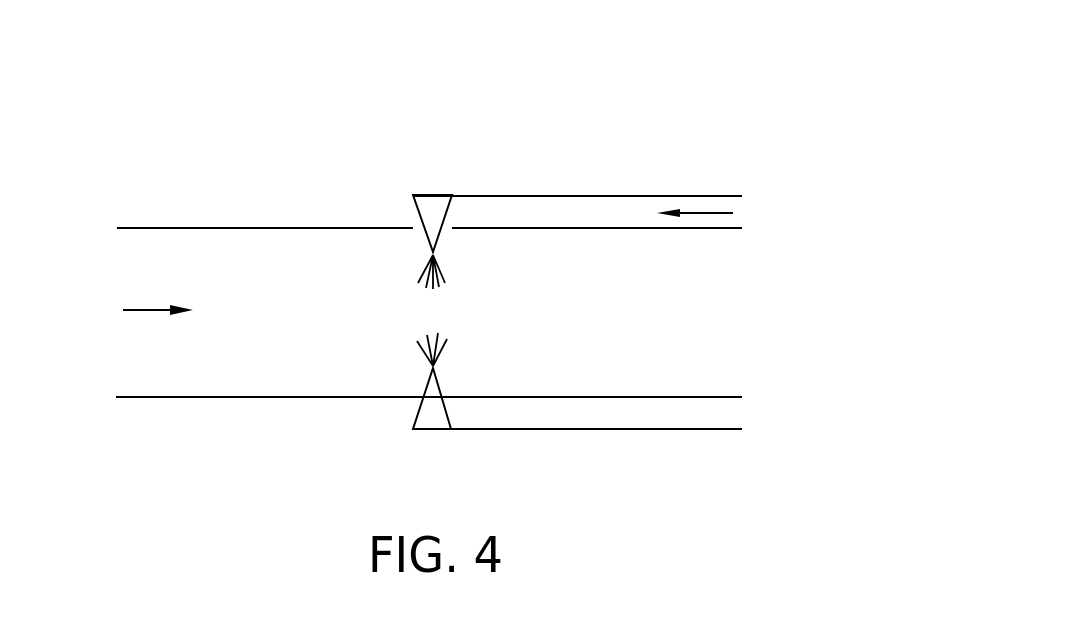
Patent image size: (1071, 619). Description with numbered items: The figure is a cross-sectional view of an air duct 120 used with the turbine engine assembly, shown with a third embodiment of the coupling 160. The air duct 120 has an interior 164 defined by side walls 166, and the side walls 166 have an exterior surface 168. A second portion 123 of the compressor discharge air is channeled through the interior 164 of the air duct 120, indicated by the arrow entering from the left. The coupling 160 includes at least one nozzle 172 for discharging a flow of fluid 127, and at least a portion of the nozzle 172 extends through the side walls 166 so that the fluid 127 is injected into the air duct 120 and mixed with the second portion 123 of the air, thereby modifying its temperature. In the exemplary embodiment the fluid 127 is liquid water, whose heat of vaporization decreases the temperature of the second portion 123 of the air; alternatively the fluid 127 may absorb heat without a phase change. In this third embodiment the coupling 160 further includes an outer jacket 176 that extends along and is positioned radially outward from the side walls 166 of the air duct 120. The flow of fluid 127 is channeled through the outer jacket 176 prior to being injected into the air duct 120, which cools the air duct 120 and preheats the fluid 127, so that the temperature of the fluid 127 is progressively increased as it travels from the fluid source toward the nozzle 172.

The air duct 120 is at (665, 96).
The second portion of CDC air 123 is at (142, 310).
The flow of fluid 127 is at (715, 213).
The coupling 160 is at (388, 170).
The interior 164 is at (703, 335).
The side walls 166 is at (280, 228).
The exterior surface 168 is at (340, 228).
The nozzle 172 is at (448, 196).
The outer jacket 176 is at (597, 196).